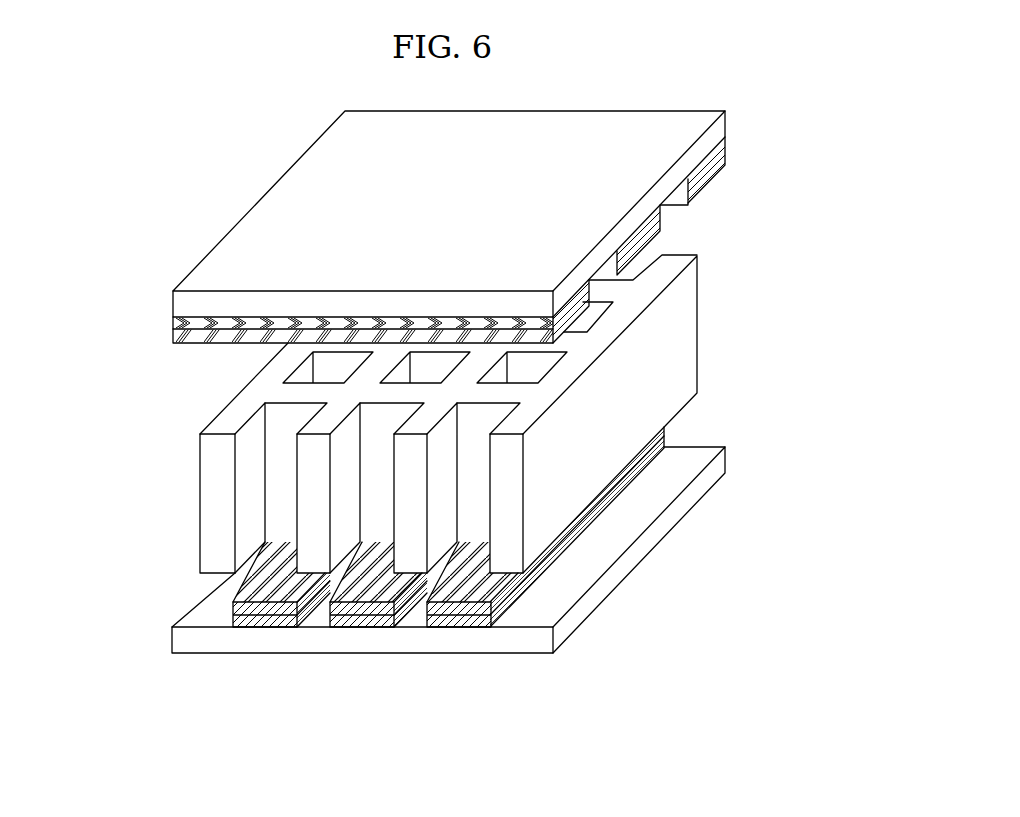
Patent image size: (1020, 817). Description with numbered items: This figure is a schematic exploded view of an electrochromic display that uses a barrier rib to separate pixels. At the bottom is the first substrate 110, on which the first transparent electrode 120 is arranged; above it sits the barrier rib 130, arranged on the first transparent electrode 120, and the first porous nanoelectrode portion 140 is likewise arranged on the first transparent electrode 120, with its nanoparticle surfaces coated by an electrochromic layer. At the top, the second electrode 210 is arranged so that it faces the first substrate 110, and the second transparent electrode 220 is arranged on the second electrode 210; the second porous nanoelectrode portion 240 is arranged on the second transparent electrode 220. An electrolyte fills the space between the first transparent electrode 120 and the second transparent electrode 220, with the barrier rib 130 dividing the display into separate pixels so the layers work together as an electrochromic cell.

The first substrate 110 is at (606, 578).
The first transparent electrode 120 is at (248, 622).
The barrier rib 130 is at (688, 340).
The first porous nanoelectrode portion 140 is at (248, 608).
The second electrode 210 is at (182, 302).
The second transparent electrode 220 is at (182, 320).
The second porous nanoelectrode portion 240 is at (182, 337).